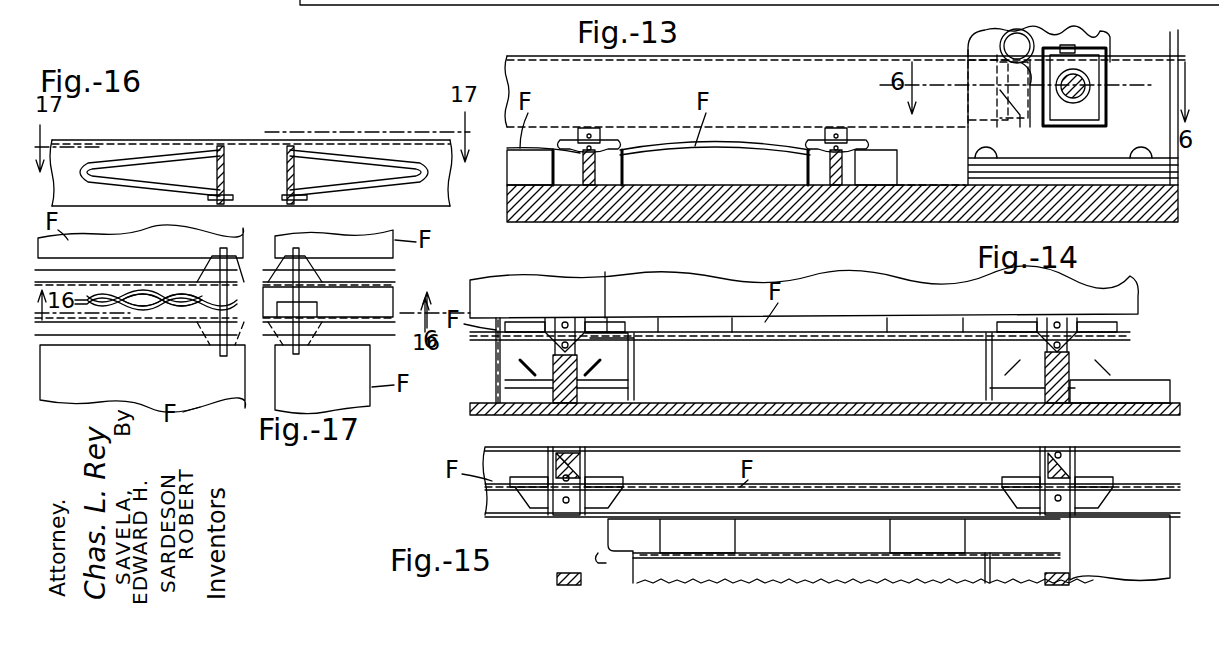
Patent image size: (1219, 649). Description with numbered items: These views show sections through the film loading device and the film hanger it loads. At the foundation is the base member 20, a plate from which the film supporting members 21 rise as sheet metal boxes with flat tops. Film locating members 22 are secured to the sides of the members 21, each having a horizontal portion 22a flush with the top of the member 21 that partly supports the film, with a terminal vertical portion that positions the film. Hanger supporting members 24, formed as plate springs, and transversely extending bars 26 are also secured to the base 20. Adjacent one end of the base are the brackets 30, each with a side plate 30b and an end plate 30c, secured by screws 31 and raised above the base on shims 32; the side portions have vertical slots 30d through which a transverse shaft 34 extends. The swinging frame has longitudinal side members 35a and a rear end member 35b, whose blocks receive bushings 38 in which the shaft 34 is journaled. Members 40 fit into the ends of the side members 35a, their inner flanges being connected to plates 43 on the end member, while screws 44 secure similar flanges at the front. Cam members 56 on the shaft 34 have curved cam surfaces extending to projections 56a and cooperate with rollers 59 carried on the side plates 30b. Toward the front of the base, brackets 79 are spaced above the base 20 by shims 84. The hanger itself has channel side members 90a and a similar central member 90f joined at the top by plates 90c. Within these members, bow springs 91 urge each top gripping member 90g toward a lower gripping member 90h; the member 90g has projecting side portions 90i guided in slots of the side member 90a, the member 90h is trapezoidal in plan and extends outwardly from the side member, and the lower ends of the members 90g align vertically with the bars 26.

In FIG. 13, the spacing plates or shims 84 is at (428, 5).
In FIG. 13, the brackets 79 is at (471, 5).
In FIG. 13, the base member 20 is at (625, 200).
In FIG. 14, the base member 20 is at (470, 415).
In FIG. 13, the film supporting members 21 is at (507, 178).
In FIG. 14, the film supporting members 21 is at (496, 390).
In FIG. 15, the film supporting members 21 is at (935, 558).
In FIG. 14, the film locating or positioning members 22 is at (608, 282).
In FIG. 15, the film locating or positioning members 22 is at (660, 535).
In FIG. 14, the horizontal portion 22a is at (645, 348).
In FIG. 15, the horizontal portion 22a is at (606, 560).
In FIG. 13, the hanger supporting members 24 is at (880, 170).
In FIG. 14, the hanger supporting members 24 is at (1120, 388).
In FIG. 15, the hanger supporting members 24 is at (1080, 542).
In FIG. 13, the transversely extending members or bars 26 is at (586, 185).
In FIG. 14, the transversely extending members or bars 26 is at (1068, 403).
In FIG. 15, the transversely extending members or bars 26 is at (555, 580).
In FIG. 13, the brackets 30 is at (1136, 30).
In FIG. 13, the side portion or plate 30b is at (968, 43).
In FIG. 13, the end plate 30c is at (1178, 34).
In FIG. 13, the vertically extending slots 30d is at (1060, 48).
In FIG. 13, the screws 31 is at (975, 156).
In FIG. 13, the spacing plates or shims 32 is at (1170, 178).
In FIG. 13, the shaft 34 is at (1078, 103).
In FIG. 13, the longitudinally extending members 35a is at (776, 58).
In FIG. 14, the longitudinally extending members 35a is at (715, 280).
In FIG. 13, the rear end member 35b is at (1108, 80).
In FIG. 13, the bushings 38 is at (1068, 127).
In FIG. 13, the members 40 is at (968, 77).
In FIG. 13, the plates 43 is at (1040, 115).
In FIG. 13, the screws 44 is at (1018, 117).
In FIG. 13, the cam members 56 is at (990, 105).
In FIG. 13, the projections 56a is at (1085, 44).
In FIG. 13, the rollers 59 is at (1008, 34).
In FIG. 13, the side members 90a is at (842, 128).
In FIG. 16, the side members 90a is at (192, 140).
In FIG. 17, the side members 90a is at (398, 275).
In FIG. 14, the side members 90a is at (438, 264).
In FIG. 15, the side members 90a is at (1040, 455).
In FIG. 14, the upper and lower plates 90c is at (634, 392).
In FIG. 15, the upper and lower plates 90c is at (745, 452).
In FIG. 15, the central member 90f is at (588, 455).
In FIG. 13, the top member 90g is at (578, 130).
In FIG. 16, the top member 90g is at (286, 190).
In FIG. 17, the top member 90g is at (222, 360).
In FIG. 14, the top member 90g is at (1085, 324).
In FIG. 15, the top member 90g is at (485, 470).
In FIG. 13, the lower gripping member 90h is at (612, 152).
In FIG. 17, the lower gripping member 90h is at (308, 330).
In FIG. 14, the lower gripping member 90h is at (615, 374).
In FIG. 15, the lower gripping member 90h is at (615, 505).
In FIG. 13, the projecting side portions 90i is at (605, 140).
In FIG. 14, the projecting side portions 90i is at (507, 322).
In FIG. 15, the projecting side portions 90i is at (1108, 480).
In FIG. 13, the bow springs 91 is at (830, 135).
In FIG. 16, the bow springs 91 is at (125, 152).
In FIG. 17, the bow springs 91 is at (145, 312).
In FIG. 14, the bow springs 91 is at (565, 322).
In FIG. 15, the bow springs 91 is at (566, 460).